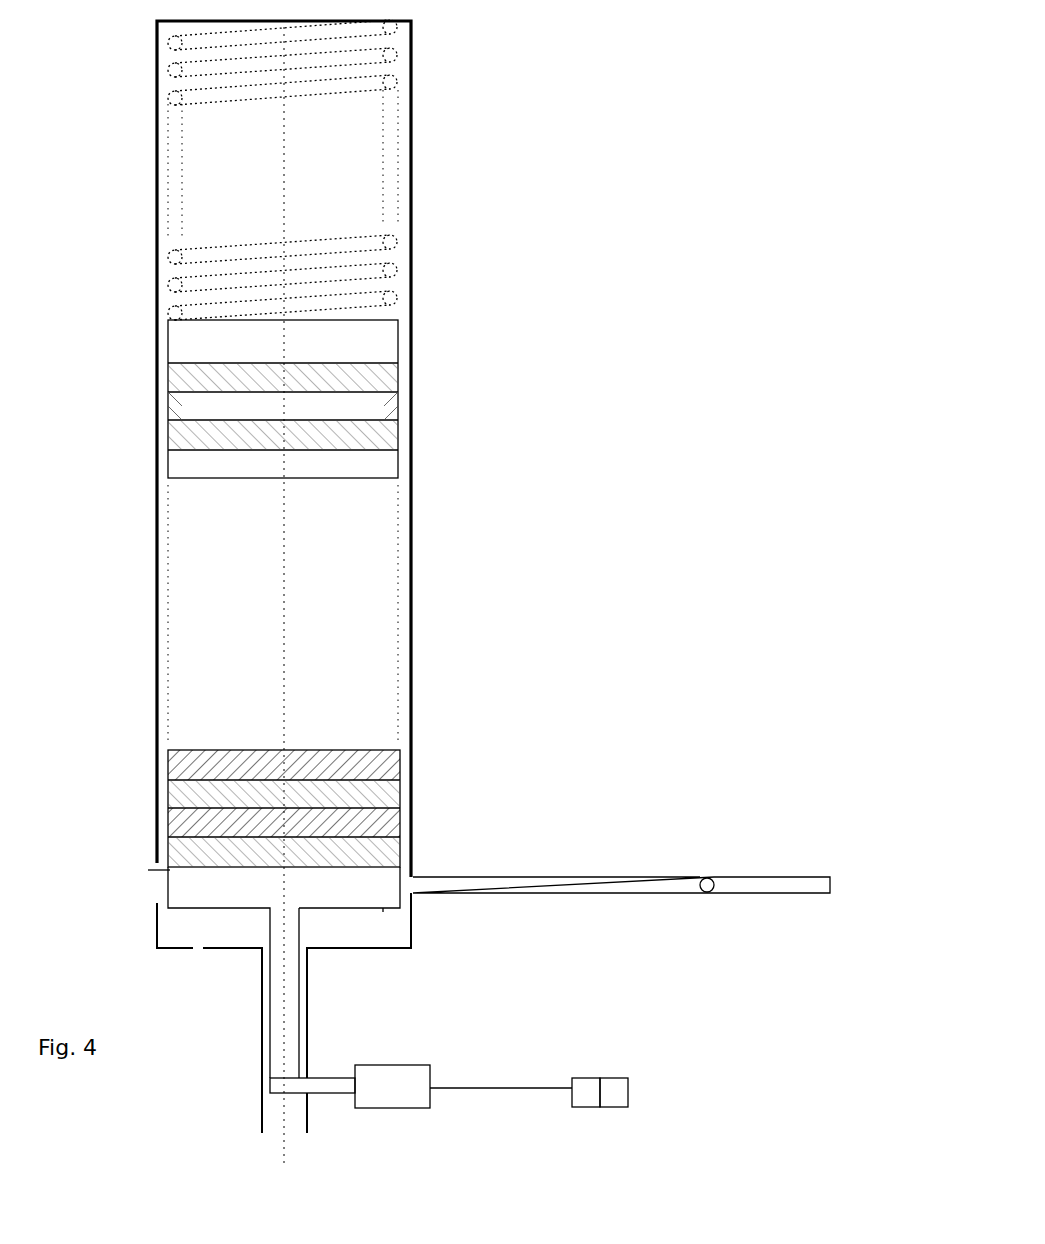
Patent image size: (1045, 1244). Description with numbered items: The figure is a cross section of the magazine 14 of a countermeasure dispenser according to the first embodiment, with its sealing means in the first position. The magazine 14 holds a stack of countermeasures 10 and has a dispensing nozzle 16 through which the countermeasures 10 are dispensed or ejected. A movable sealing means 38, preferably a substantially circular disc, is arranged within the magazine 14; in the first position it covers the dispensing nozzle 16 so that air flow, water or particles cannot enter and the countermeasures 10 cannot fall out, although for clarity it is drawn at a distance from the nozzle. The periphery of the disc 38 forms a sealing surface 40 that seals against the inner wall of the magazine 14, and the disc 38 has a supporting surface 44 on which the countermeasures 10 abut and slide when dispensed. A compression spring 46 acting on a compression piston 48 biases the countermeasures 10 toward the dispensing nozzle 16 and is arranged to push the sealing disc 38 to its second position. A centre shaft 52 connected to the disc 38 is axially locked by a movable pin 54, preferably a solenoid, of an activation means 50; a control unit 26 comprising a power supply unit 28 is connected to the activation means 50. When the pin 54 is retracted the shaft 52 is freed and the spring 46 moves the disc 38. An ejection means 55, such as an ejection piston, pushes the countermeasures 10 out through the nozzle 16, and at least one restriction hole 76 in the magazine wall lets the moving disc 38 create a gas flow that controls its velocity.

The countermeasures 10 is at (402, 762).
The magazine 14 is at (328, 592).
The dispensing nozzle 16 is at (155, 903).
The control unit 26 is at (587, 1078).
The power supply unit 28 is at (608, 1078).
The sealing means 38 is at (383, 908).
The sealing surface 40 is at (157, 868).
The supporting surface 44 is at (190, 868).
The compression spring 46 is at (411, 42).
The compression piston 48 is at (411, 340).
The activation means 50 is at (375, 1108).
The centre shaft 52 is at (262, 975).
The movable pin 54 is at (328, 1078).
The ejection means 55 is at (558, 878).
The restriction hole 76 is at (365, 948).